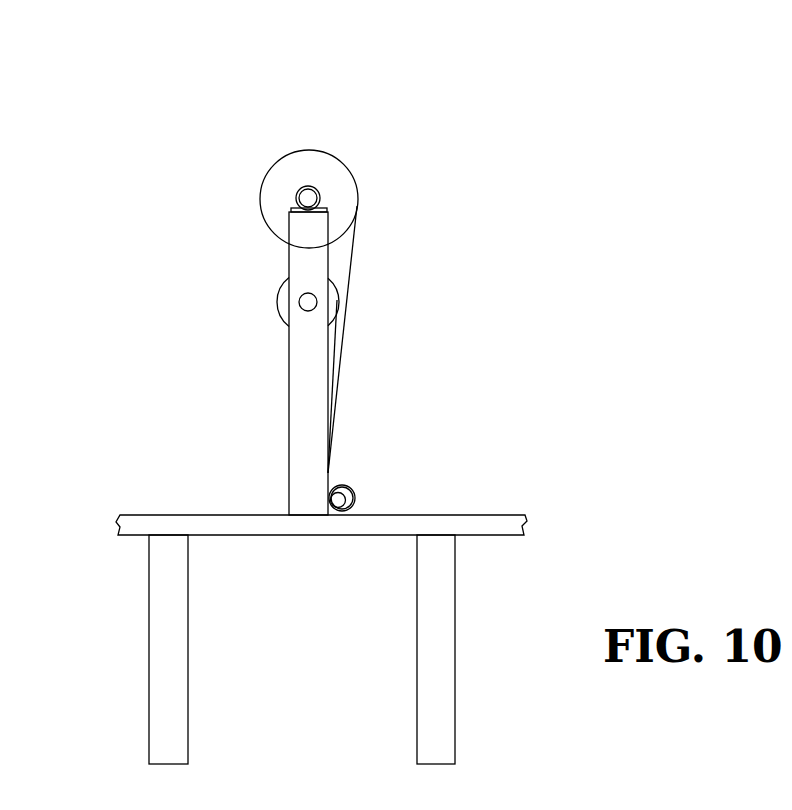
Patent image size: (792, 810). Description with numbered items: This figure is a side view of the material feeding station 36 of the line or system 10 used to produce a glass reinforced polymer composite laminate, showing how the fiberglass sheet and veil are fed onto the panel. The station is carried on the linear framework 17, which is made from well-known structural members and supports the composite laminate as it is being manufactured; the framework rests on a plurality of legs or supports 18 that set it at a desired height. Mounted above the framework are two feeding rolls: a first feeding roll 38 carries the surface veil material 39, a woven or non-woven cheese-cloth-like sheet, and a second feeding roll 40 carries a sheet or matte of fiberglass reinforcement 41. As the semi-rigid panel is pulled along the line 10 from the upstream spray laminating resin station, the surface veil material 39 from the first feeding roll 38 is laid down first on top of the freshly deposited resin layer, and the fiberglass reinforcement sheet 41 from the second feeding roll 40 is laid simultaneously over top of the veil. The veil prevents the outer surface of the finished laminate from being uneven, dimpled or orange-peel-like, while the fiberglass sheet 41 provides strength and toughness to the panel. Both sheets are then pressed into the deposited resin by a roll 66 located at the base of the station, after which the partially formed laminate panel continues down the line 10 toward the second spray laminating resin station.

The line or system 10 is at (405, 313).
The linear framework 17 is at (135, 530).
The legs or supports 18 is at (188, 700).
The material feeding station 36 is at (291, 122).
The first feeding roll 38 is at (278, 312).
The surface veil material 39 is at (335, 347).
The second feeding roll 40 is at (275, 167).
The fiberglass reinforcement sheet 41 is at (352, 260).
The roll 66 is at (343, 502).